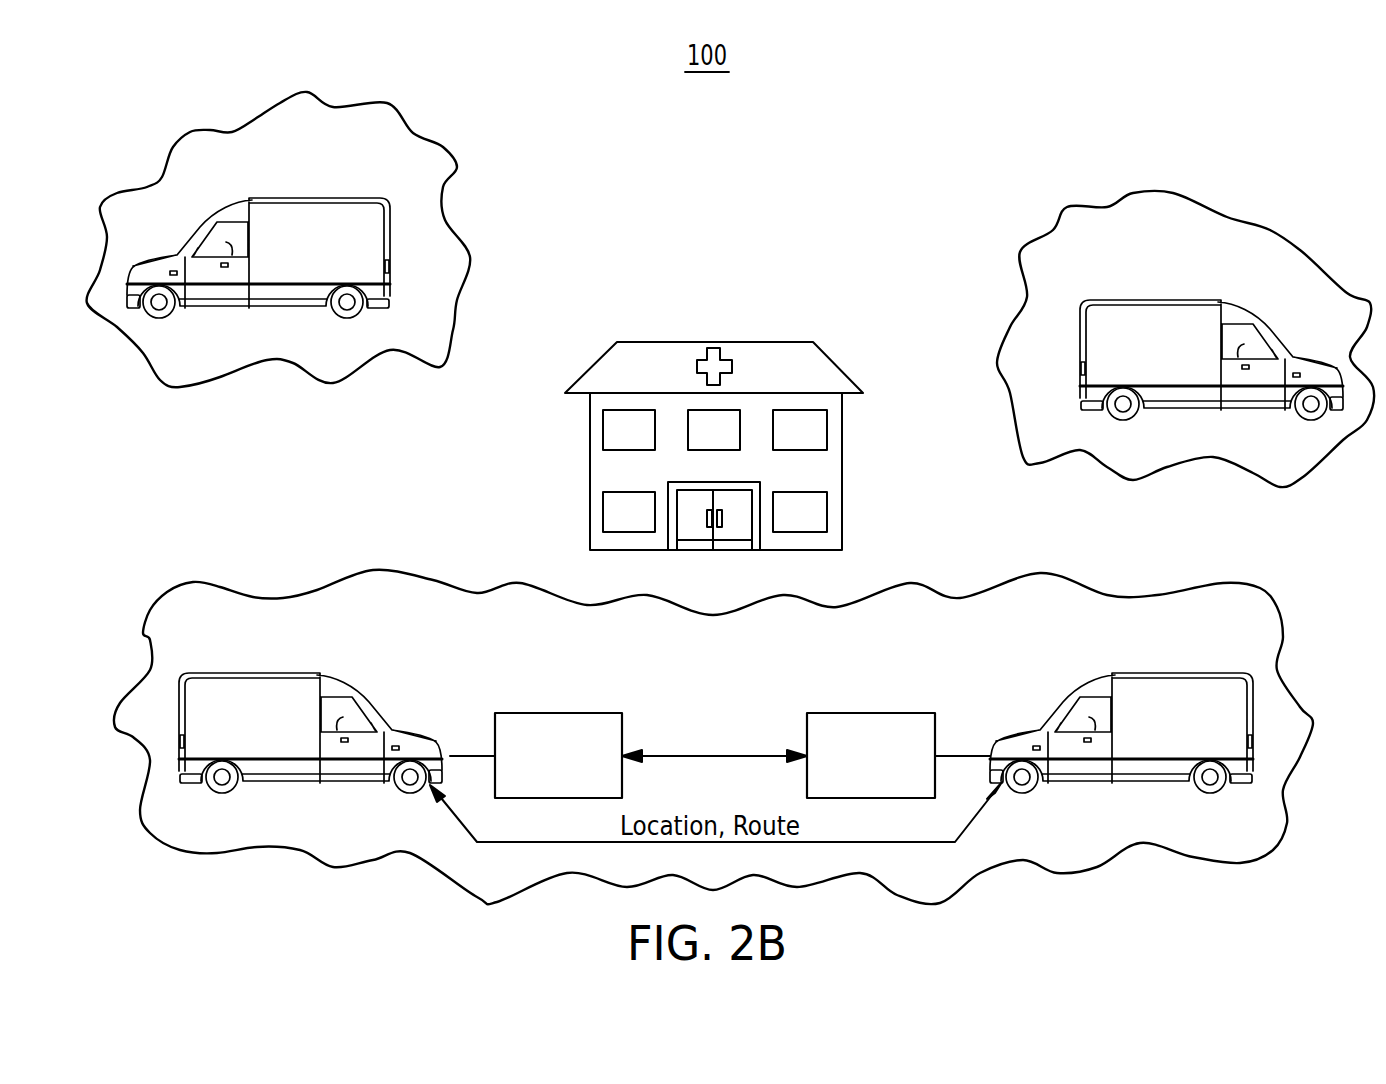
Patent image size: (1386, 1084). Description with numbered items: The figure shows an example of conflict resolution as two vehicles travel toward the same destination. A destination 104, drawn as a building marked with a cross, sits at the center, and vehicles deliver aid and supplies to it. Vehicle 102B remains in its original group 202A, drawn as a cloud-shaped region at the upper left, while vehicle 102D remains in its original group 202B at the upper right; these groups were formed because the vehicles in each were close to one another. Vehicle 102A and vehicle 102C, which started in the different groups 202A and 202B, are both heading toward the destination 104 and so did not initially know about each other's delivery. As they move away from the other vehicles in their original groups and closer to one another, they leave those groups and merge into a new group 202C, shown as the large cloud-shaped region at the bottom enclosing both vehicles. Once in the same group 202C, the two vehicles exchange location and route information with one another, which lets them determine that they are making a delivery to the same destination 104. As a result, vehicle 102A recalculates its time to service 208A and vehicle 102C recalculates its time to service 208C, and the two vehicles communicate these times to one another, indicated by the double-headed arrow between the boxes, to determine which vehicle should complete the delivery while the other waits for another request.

The vehicle 102A is at (310, 675).
The vehicle 102B is at (323, 200).
The vehicle 102C is at (1120, 673).
The vehicle 102D is at (1140, 300).
The destination 104 is at (583, 372).
The group 202A is at (443, 147).
The group 202B is at (1062, 208).
The group 202C is at (1277, 607).
The time to service 208A is at (560, 713).
The time to service 208C is at (873, 713).